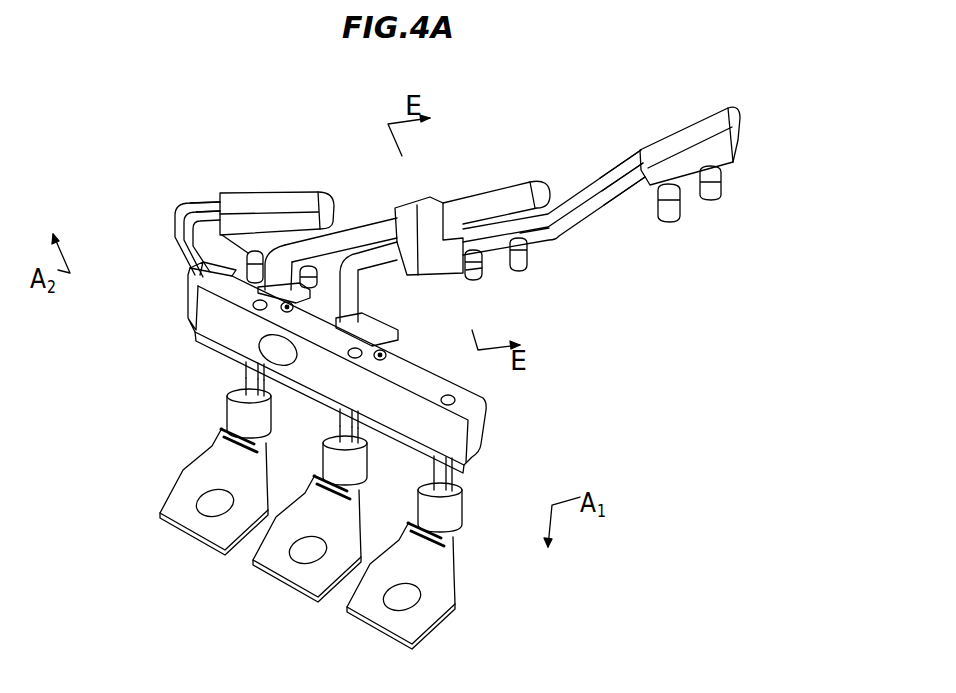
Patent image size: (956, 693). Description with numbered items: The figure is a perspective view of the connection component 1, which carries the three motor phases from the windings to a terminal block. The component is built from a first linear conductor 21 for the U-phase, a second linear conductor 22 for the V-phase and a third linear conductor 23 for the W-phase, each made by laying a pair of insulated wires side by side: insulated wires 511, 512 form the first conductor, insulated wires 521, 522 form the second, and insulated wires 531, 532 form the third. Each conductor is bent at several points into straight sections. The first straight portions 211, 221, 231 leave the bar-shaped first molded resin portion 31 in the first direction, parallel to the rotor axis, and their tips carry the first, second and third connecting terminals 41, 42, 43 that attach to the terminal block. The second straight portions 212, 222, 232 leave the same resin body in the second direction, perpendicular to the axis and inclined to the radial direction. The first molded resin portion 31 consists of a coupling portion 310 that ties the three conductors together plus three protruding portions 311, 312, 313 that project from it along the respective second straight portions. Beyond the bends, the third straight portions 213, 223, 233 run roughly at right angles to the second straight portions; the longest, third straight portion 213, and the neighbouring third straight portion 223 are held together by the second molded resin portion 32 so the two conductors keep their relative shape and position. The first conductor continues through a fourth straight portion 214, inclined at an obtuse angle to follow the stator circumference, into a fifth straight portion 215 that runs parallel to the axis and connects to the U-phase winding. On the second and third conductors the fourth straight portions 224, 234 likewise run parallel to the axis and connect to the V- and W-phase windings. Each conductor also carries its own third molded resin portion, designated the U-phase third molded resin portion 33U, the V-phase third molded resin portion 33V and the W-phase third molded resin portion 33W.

The connection component 1 is at (757, 102).
The first linear conductor 21 is at (597, 221).
The second linear conductor 22 is at (237, 464).
The third linear conductor 23 is at (175, 381).
The first molded resin portion 31 is at (480, 422).
The second molded resin portion 32 is at (423, 210).
The U-phase third molded resin portion 33U is at (737, 140).
The V-phase third molded resin portion 33V is at (493, 197).
The W-phase third molded resin portion 33W is at (242, 198).
The first connecting terminal 41 is at (367, 627).
The second connecting terminal 42 is at (275, 582).
The third connecting terminal 43 is at (172, 532).
The first straight portion 211 is at (457, 482).
The second straight portion 212 is at (370, 300).
The third straight portion 213 is at (532, 238).
The fourth straight portion 214 is at (607, 180).
The fifth straight portion 215 is at (715, 192).
The first straight portion 221 is at (362, 436).
The second straight portion 222 is at (283, 262).
The third straight portion 223 is at (307, 243).
The fourth straight portion 224 is at (476, 280).
The first straight portion 231 is at (240, 370).
The second straight portion 232 is at (187, 237).
The third straight portion 233 is at (212, 208).
The fourth straight portion 234 is at (250, 250).
The coupling portion 310 is at (213, 310).
The protruding portion 311 is at (395, 334).
The protruding portion 312 is at (300, 293).
The protruding portion 313 is at (195, 272).
The insulated wire 511 is at (602, 192).
The insulated wire 512 is at (600, 208).
The insulated wire 521 is at (320, 450).
The insulated wire 522 is at (340, 437).
The insulated wire 531 is at (253, 395).
The insulated wire 532 is at (243, 383).